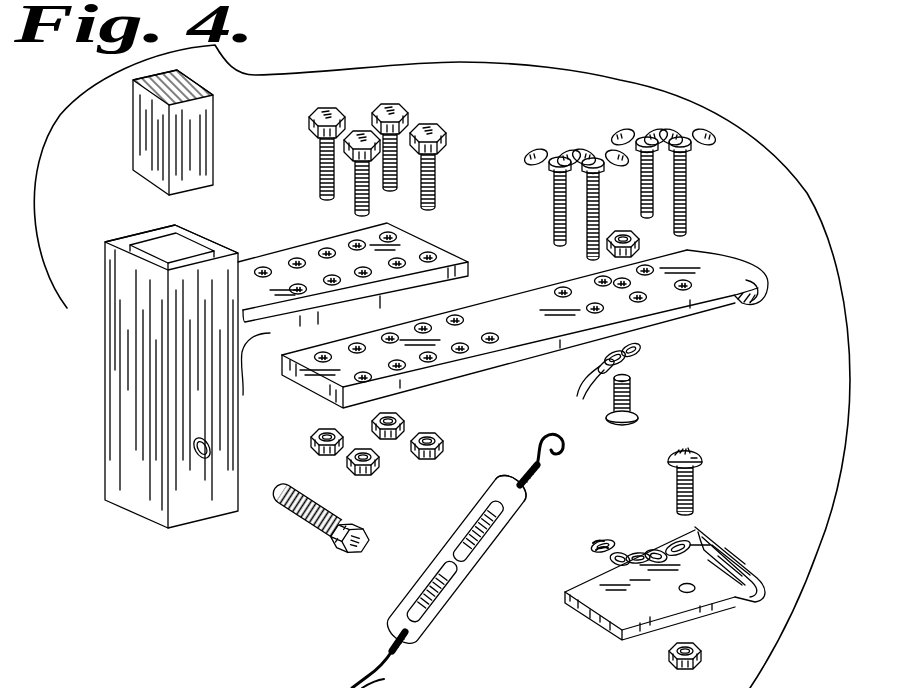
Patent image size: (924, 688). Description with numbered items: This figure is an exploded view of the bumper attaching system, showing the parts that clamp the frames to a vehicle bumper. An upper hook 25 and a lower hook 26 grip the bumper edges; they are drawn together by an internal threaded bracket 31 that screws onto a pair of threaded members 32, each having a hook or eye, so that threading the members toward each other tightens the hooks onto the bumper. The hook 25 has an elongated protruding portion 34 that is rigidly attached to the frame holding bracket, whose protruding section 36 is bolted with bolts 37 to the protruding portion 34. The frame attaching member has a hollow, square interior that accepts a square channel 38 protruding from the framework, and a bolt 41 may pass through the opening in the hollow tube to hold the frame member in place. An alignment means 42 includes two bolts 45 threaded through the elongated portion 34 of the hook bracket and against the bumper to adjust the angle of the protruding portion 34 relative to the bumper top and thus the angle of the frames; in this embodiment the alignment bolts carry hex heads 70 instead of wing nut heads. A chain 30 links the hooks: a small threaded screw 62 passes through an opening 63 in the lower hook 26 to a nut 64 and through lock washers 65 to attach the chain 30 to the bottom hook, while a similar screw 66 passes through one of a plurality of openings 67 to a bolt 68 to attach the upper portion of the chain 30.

The hook 25 is at (752, 306).
The hook 26 is at (684, 580).
The chain 30 is at (578, 358).
The internal threaded bracket 31 is at (450, 604).
The threaded members 32 is at (397, 656).
The protruding portion 34 is at (450, 373).
The protruding section 36 is at (253, 350).
The bolts 37 is at (437, 176).
The square channel 38 is at (213, 135).
The bolt 41 is at (307, 524).
The alignment means 42 is at (595, 175).
The bolts 45 is at (553, 207).
The threaded screw 62 is at (678, 437).
The opening 63 is at (688, 593).
The nut 64 is at (702, 658).
The lock washers 65 is at (661, 543).
The screw 66 is at (634, 398).
The openings 67 is at (622, 288).
The bolt 68 is at (641, 229).
The hex heads 70 is at (595, 158).